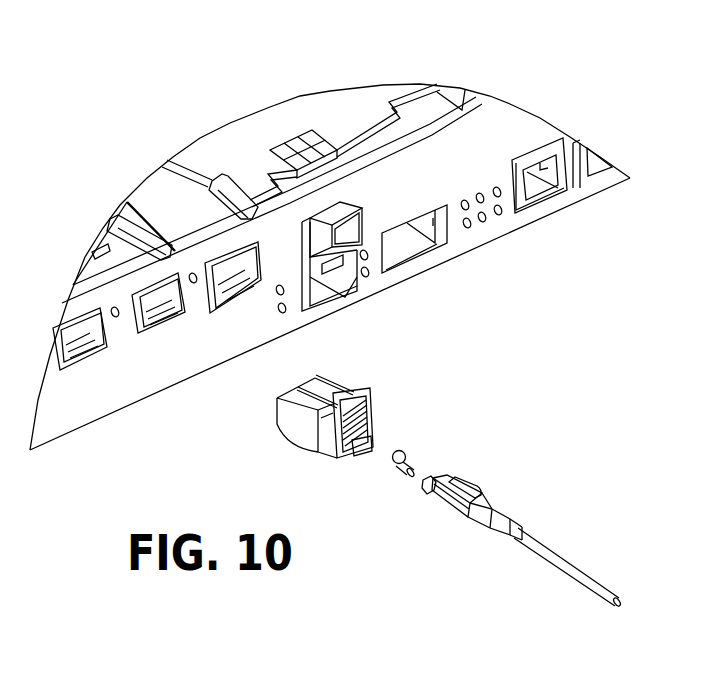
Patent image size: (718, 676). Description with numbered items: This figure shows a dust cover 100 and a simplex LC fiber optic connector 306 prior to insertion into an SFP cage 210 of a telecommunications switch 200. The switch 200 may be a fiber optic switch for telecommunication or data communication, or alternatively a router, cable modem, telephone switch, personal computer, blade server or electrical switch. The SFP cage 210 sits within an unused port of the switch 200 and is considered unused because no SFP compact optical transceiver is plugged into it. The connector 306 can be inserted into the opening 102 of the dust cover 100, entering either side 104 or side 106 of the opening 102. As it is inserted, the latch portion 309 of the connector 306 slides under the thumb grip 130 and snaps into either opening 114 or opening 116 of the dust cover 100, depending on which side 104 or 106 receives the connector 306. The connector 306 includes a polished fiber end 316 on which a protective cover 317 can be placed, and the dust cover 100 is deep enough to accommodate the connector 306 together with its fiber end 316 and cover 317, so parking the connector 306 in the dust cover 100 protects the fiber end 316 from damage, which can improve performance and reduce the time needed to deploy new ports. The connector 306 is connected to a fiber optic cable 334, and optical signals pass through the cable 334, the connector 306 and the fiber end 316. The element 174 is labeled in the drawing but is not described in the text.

The telecommunications switch 200 is at (528, 110).
The SFP cage 210 is at (158, 335).
The dust cover 100 is at (351, 426).
The opening 114 is at (306, 406).
The opening 116 is at (348, 387).
The thumb grip 130 is at (374, 392).
The side 106 is at (376, 418).
The opening 102 is at (348, 442).
The side 104 is at (333, 429).
The latch tab 174 is at (363, 463).
The cover 317 is at (396, 475).
The simplex LC fiber optic connector 306 is at (516, 504).
The fiber end 316 is at (429, 470).
The latch portion 309 is at (464, 478).
The fiber optic cable 334 is at (552, 551).